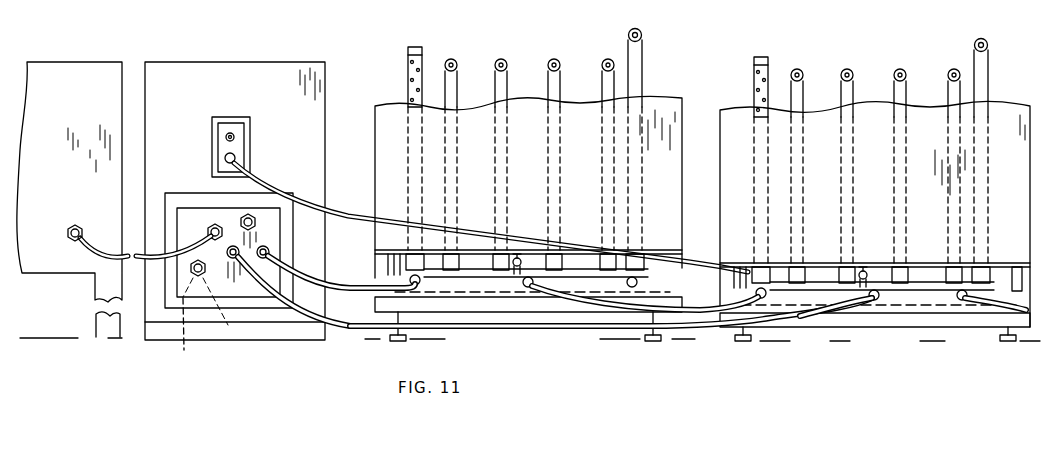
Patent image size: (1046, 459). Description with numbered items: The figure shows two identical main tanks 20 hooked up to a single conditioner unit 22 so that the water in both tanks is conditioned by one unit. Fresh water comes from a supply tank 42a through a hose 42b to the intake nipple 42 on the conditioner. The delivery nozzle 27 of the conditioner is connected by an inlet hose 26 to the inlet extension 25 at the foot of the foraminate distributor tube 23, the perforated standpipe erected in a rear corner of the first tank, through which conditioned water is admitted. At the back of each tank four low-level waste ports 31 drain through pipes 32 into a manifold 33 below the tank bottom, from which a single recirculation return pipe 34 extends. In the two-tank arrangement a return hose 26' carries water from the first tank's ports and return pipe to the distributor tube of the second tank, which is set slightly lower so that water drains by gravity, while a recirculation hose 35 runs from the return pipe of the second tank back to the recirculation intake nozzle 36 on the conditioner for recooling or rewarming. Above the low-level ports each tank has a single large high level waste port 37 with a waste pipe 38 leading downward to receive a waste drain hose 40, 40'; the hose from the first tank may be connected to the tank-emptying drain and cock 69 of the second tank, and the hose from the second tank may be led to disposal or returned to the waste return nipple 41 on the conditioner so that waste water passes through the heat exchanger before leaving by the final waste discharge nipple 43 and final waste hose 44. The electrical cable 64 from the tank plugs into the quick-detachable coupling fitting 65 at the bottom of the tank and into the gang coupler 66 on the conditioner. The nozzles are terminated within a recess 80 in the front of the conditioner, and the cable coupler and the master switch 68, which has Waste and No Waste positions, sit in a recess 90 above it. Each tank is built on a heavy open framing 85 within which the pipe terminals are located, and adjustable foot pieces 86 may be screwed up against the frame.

The main tank 20 is at (380, 142).
The conditioner unit 22 is at (218, 74).
The foraminate distributor tube 23 is at (408, 85).
The inlet extension 25 is at (420, 282).
The inlet hose 26 is at (341, 285).
The return hose 26' is at (645, 321).
The delivery nozzle 27 is at (233, 243).
The low-level waste ports 31 is at (456, 60).
The pipes 32 is at (458, 98).
The manifold 33 is at (469, 260).
The recirculation return pipe 34 is at (528, 288).
The recirculation hose 35 is at (354, 325).
The recirculation intake nozzle 36 is at (271, 252).
The high level waste port 37 is at (629, 35).
The waste pipe 38 is at (643, 68).
The waste drain hose 40 is at (632, 287).
The waste drain hose 40' is at (781, 315).
The waste return nipple 41 is at (257, 223).
The intake nipple 42 is at (209, 228).
The supply tank 42a is at (73, 83).
The supply hose 42b is at (102, 247).
The final waste discharge nipple 43 is at (206, 273).
The final waste hose 44 is at (181, 332).
The electrical cable 64 is at (355, 216).
The quick-detachable coupling fitting 65 is at (447, 250).
The gang coupler 66 is at (238, 157).
The master switch 68 is at (236, 134).
The tank-emptying drain and cock 69 is at (521, 250).
The recess 80 is at (180, 270).
The open framing 85 is at (1018, 272).
The adjustable foot pieces 86 is at (397, 341).
The recess 90 is at (222, 150).